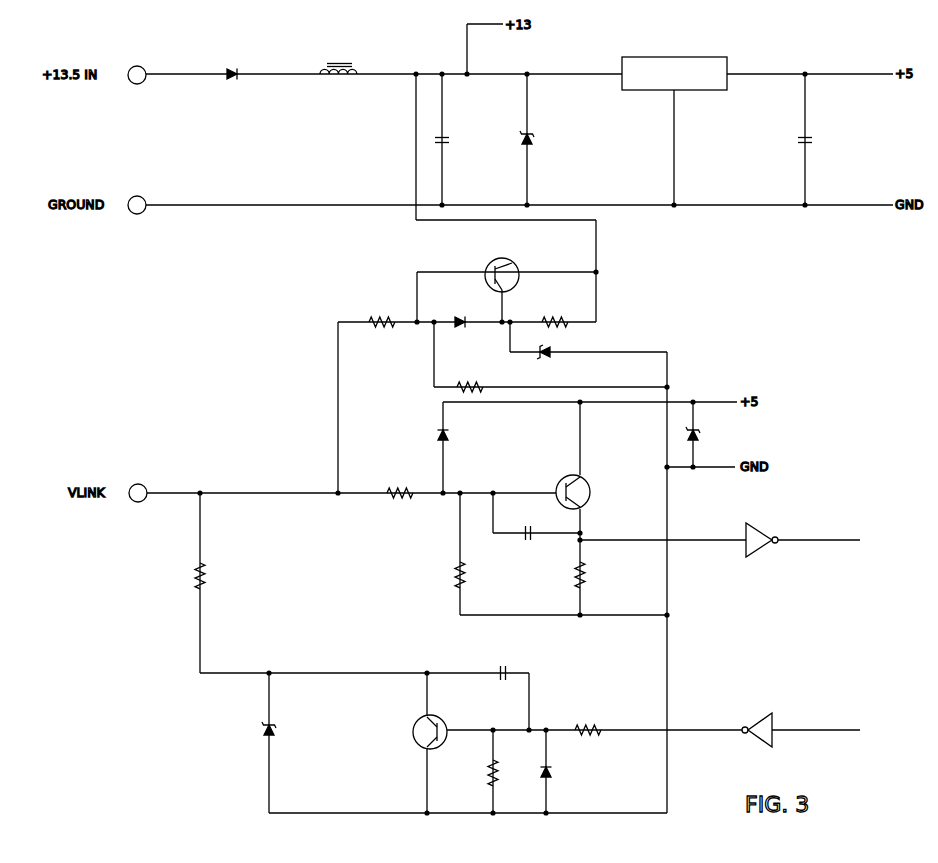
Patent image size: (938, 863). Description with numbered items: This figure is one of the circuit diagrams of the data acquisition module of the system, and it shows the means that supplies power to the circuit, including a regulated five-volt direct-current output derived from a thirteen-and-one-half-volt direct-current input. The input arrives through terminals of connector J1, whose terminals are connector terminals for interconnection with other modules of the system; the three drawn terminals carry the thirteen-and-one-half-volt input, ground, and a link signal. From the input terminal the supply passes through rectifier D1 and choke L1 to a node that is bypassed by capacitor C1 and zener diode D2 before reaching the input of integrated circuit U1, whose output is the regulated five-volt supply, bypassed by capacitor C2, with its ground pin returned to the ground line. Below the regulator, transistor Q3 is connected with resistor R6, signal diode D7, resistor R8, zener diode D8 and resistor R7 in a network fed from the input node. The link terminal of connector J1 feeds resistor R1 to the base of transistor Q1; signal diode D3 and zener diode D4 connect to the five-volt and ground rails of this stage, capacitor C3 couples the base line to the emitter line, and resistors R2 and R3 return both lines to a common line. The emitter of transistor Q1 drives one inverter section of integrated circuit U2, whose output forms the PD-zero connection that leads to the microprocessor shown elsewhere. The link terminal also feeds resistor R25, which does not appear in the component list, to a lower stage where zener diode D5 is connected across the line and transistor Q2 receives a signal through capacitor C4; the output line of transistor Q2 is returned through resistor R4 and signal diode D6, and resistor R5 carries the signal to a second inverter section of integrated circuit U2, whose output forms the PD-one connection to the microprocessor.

The connector terminal J1 is at (129, 273).
The rectifier D1 is at (234, 75).
The choke L1 is at (338, 54).
The capacitor C1 is at (451, 139).
The zener diode D2 is at (560, 136).
The integrated circuit U1 is at (673, 67).
The capacitor C2 is at (815, 139).
The transistor Q3 is at (509, 261).
The resistor R6 is at (376, 316).
The signal diode D7 is at (463, 315).
The resistor R8 is at (549, 308).
The zener diode D8 is at (556, 354).
The resistor R7 is at (464, 372).
The signal diode D3 is at (473, 433).
The zener diode D4 is at (731, 430).
The resistor R1 is at (395, 479).
The transistor Q1 is at (601, 489).
The capacitor C3 is at (520, 533).
The resistor R2 is at (474, 575).
The resistor R3 is at (594, 575).
The integrated circuit U2 is at (804, 622).
The resistor 30R R25 is at (215, 578).
The capacitor C4 is at (494, 672).
The zener diode D5 is at (307, 727).
The transistor Q2 is at (464, 722).
The resistor R4 is at (508, 773).
The resistor R5 is at (583, 716).
The signal diode D6 is at (577, 767).